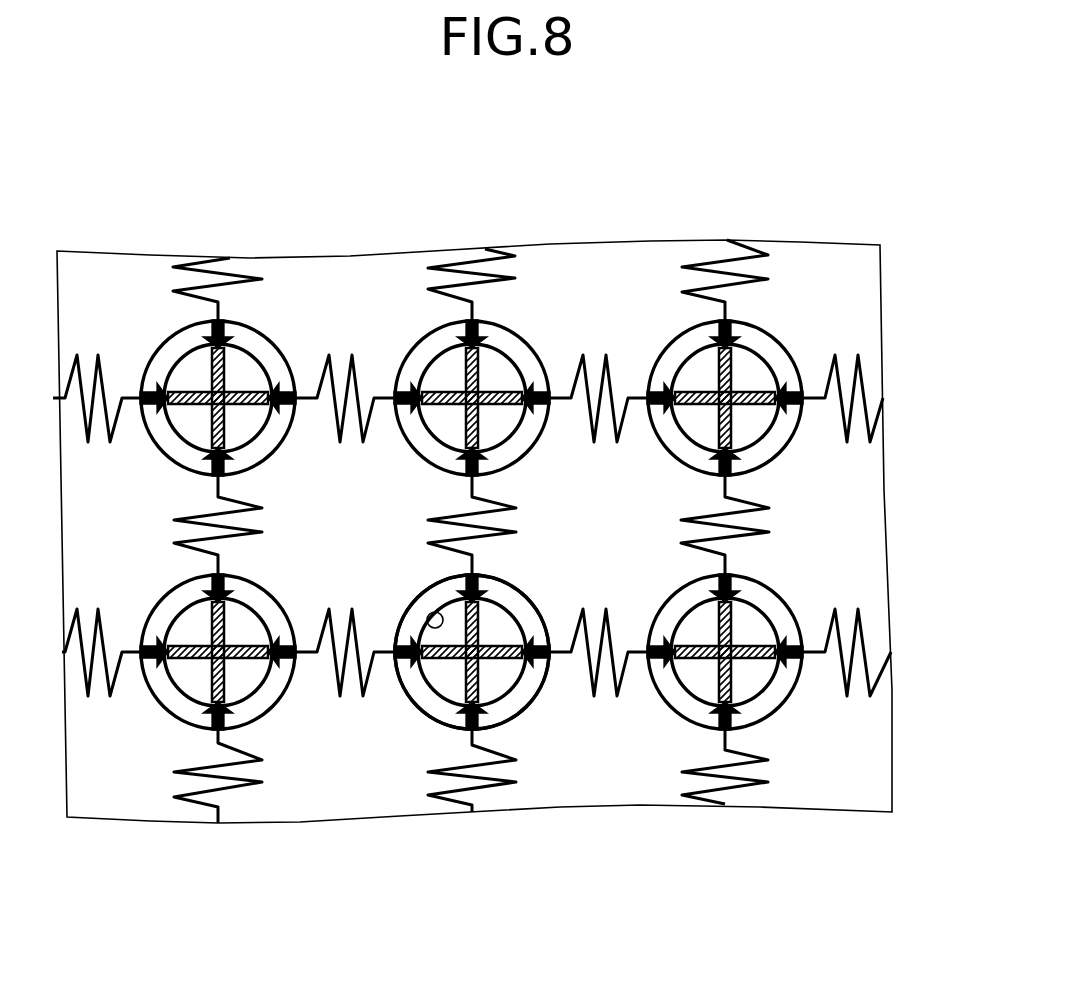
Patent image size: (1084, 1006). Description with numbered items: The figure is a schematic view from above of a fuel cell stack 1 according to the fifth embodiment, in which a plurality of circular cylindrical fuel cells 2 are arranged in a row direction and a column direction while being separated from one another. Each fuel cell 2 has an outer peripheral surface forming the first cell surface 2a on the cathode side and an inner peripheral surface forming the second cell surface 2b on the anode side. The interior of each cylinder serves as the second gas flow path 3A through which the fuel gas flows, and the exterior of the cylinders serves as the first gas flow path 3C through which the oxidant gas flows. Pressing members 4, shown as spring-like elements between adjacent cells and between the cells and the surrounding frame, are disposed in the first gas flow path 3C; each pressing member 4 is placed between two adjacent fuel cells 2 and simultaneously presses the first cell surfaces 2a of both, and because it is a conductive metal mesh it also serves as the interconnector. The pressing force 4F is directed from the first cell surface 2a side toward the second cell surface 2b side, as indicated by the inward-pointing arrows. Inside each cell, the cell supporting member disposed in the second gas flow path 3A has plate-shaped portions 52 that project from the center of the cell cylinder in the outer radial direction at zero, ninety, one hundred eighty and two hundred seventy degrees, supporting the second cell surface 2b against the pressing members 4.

The fuel cell stack 1 is at (792, 174).
The fuel cell 2 is at (644, 744).
The first cell surface 2a is at (465, 616).
The second cell surface 2b is at (401, 588).
The second gas flow path 3A is at (432, 769).
The first gas flow path 3C is at (476, 785).
The pressing member 4 is at (372, 662).
The pressing force 4F is at (459, 782).
The plate-shaped portion 52 is at (685, 597).